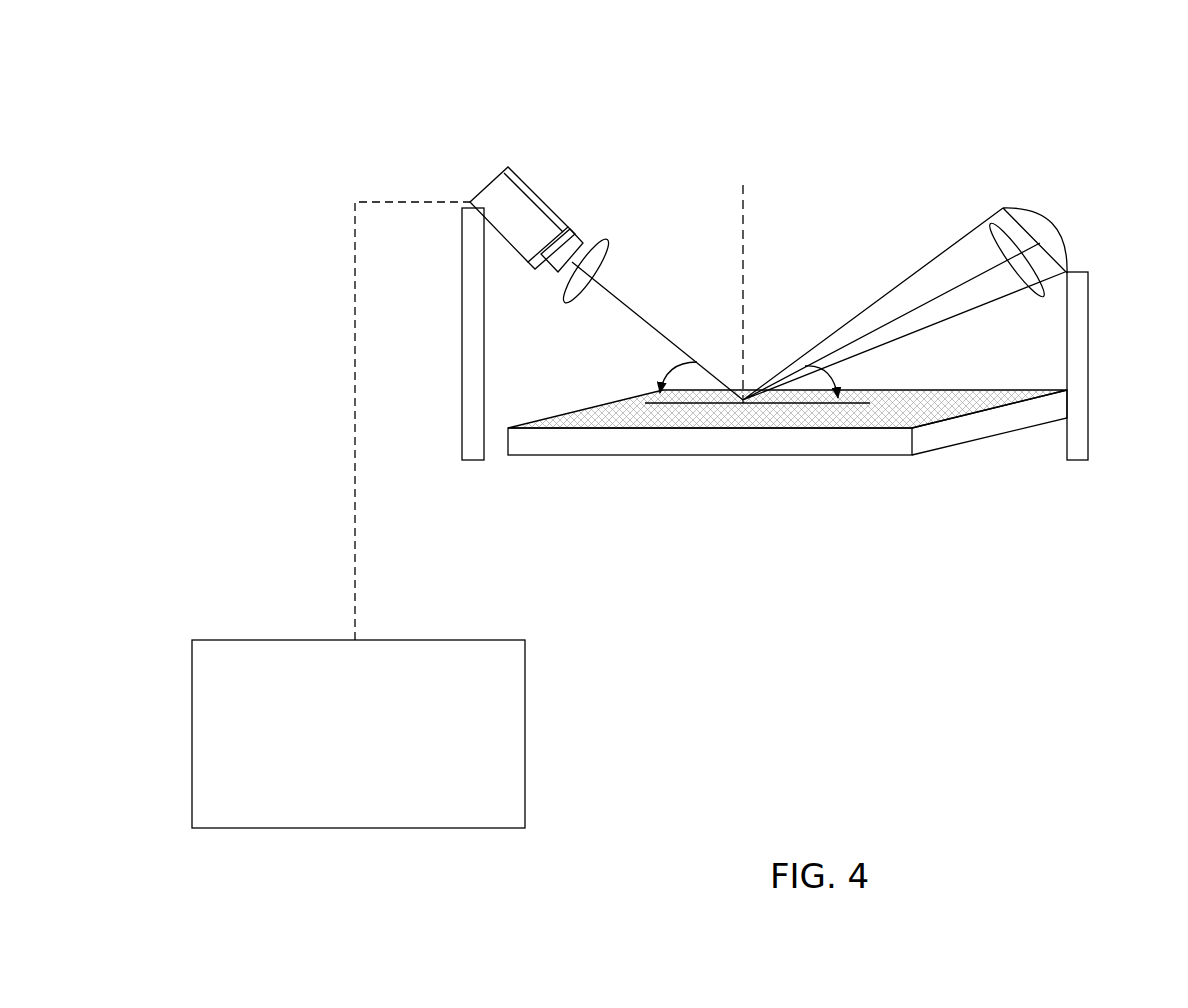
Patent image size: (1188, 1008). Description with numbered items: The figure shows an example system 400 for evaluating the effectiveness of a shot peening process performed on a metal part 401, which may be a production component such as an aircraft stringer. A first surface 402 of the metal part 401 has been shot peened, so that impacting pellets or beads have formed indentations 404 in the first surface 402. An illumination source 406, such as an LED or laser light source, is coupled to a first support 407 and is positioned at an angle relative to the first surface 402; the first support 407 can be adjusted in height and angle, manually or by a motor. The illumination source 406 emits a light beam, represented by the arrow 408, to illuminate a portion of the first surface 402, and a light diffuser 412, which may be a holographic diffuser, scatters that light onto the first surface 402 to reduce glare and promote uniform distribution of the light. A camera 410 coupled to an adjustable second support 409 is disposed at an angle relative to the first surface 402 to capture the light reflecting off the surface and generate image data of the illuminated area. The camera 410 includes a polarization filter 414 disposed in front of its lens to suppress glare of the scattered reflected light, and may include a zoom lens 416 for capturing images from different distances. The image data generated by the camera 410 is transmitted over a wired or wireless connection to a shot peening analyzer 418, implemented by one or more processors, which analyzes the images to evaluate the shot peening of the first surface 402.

The system 400 is at (343, 88).
The metal part 401 is at (608, 460).
The first surface 402 is at (880, 392).
The indentations 404 is at (627, 413).
The illumination source 406 is at (1068, 252).
The first support 407 is at (1092, 395).
The arrow 408 is at (897, 268).
The second support 409 is at (462, 395).
The camera 410 is at (483, 183).
The light diffuser 412 is at (995, 230).
The polarization filter 414 is at (582, 268).
The zoom lens 416 is at (568, 248).
The shot peening analyzer 418 is at (358, 734).